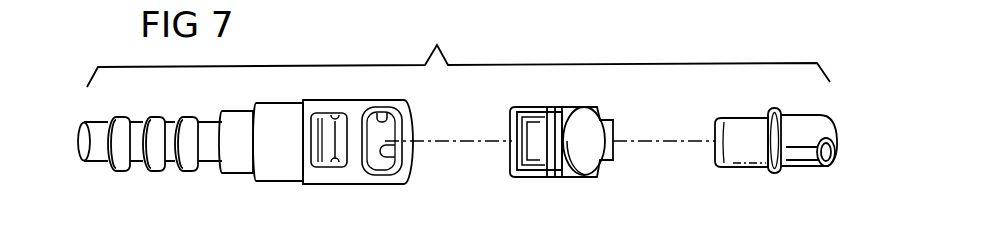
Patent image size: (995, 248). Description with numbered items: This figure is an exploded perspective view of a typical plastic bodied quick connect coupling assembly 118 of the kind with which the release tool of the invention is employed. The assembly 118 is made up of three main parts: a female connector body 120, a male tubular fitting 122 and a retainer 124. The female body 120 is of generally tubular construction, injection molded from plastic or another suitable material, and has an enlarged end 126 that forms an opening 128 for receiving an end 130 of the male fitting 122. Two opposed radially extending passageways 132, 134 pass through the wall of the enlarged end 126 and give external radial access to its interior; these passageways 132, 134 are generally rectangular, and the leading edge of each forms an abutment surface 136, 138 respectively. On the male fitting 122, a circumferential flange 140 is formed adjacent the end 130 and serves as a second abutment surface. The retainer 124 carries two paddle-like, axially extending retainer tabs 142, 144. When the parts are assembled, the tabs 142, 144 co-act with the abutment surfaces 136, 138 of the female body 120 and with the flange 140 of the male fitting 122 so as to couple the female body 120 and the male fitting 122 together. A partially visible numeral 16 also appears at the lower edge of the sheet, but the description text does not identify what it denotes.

The quick connect coupling assembly 118 is at (231, 194).
The female connector body 120 is at (288, 190).
The male tubular fitting 122 is at (819, 172).
The retainer 124 is at (620, 152).
The enlarged end 126 is at (395, 183).
The opening 128 is at (398, 128).
The end of male fitting 130 is at (727, 163).
The radially extending passageway 132 is at (335, 120).
The radially extending passageway 134 is at (378, 118).
The abutment surface 136 is at (342, 160).
The abutment surface 138 is at (387, 150).
The circumferential flange 140 is at (787, 173).
The retainer tab 142 is at (533, 152).
The retainer tab 144 is at (568, 147).
The element 16 is at (382, 240).